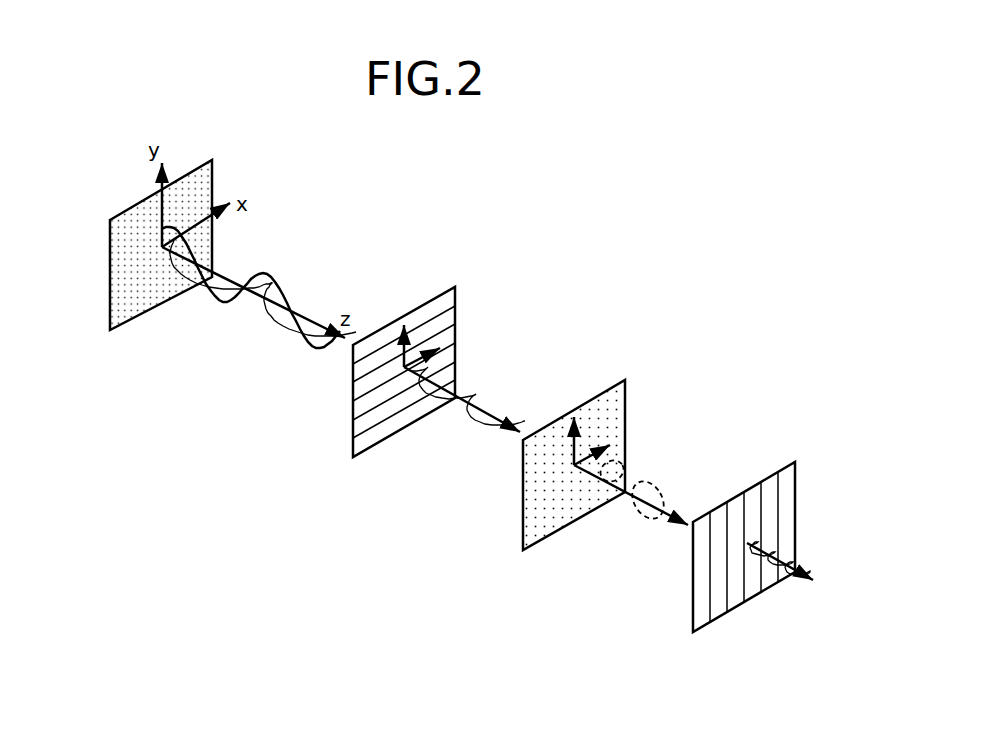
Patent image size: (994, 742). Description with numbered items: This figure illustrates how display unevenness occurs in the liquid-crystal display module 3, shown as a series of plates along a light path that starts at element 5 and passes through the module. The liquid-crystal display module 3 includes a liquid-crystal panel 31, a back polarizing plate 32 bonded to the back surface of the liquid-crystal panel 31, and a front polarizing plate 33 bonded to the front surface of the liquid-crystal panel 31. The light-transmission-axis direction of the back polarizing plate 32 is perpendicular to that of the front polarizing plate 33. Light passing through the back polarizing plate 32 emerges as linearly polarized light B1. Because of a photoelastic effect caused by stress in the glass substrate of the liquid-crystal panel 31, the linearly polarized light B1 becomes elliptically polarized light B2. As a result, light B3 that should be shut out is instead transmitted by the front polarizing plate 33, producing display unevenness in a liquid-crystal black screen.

The light source 5 is at (123, 212).
The liquid-crystal display module 3 is at (658, 192).
The back polarizing plate 32 is at (440, 293).
The liquid-crystal panel 31 is at (600, 392).
The front polarizing plate 33 is at (772, 473).
The linearly polarized light B1 is at (418, 410).
The elliptically polarized light B2 is at (623, 510).
The light to be shut B3 is at (772, 572).